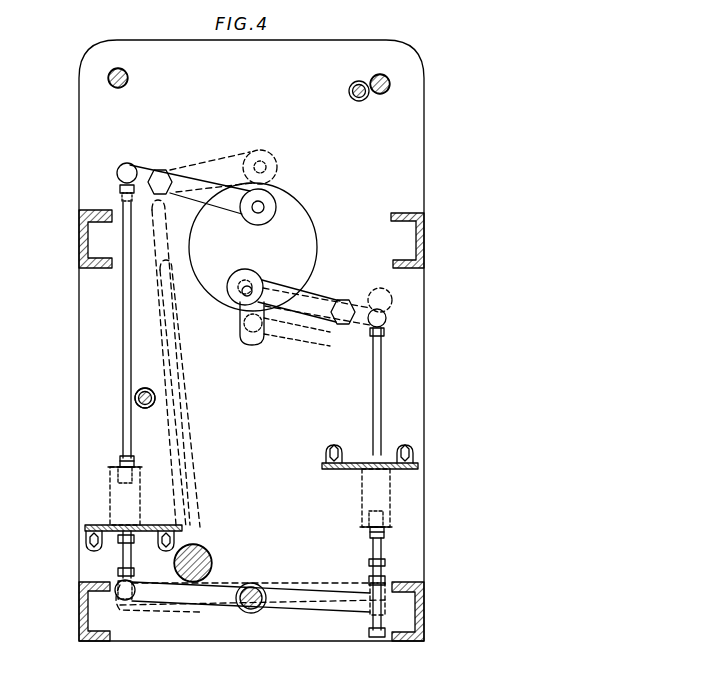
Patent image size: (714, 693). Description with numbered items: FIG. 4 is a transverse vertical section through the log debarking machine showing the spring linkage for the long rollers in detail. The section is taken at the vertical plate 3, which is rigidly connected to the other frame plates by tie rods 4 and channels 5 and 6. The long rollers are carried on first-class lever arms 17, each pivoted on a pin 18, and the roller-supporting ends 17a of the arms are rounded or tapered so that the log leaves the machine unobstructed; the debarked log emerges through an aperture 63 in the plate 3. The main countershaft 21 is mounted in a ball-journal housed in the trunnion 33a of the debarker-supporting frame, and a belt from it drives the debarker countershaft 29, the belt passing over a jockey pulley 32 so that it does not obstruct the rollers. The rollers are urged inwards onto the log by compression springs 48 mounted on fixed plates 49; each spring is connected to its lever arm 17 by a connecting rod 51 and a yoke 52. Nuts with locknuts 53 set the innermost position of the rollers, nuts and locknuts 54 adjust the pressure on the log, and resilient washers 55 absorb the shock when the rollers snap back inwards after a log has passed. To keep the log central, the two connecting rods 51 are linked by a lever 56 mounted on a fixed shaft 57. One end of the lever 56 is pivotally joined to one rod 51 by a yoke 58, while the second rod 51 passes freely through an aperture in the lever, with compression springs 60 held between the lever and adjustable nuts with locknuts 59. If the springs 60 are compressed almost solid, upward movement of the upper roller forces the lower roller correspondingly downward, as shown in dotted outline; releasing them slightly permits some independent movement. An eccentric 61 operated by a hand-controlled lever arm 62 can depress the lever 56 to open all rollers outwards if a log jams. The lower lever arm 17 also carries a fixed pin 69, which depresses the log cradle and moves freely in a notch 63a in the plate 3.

The vertical plate 3 is at (426, 114).
The tie rods 4 is at (125, 72).
The channels 5 is at (79, 240).
The channels 6 is at (79, 612).
The lever arms 17 is at (196, 187).
The roller-supporting ends 17a is at (270, 205).
The pins 18 is at (163, 172).
The main countershaft 21 is at (157, 398).
The debarker countershaft 29 is at (349, 91).
The jockey pulley 32 is at (117, 175).
The trunnion 33a is at (143, 388).
The compression springs 48 is at (108, 496).
The fixed plates 49 is at (85, 527).
The connecting rods 51 is at (123, 340).
The yokes 52 is at (386, 321).
The nuts with locknuts 53 is at (86, 541).
The nuts and locknuts 54 is at (120, 460).
The washers 55 is at (175, 533).
The lever 56 is at (300, 612).
The fixed shaft 57 is at (256, 612).
The yoke 58 is at (118, 580).
The adjustable nuts with locknuts 59 is at (386, 581).
The compression springs 60 is at (386, 598).
The eccentric 61 is at (213, 560).
The hand-controlled lever arm 62 is at (196, 462).
The aperture 63 is at (313, 231).
The notch 63a is at (264, 328).
The fixed pin 69 is at (290, 328).